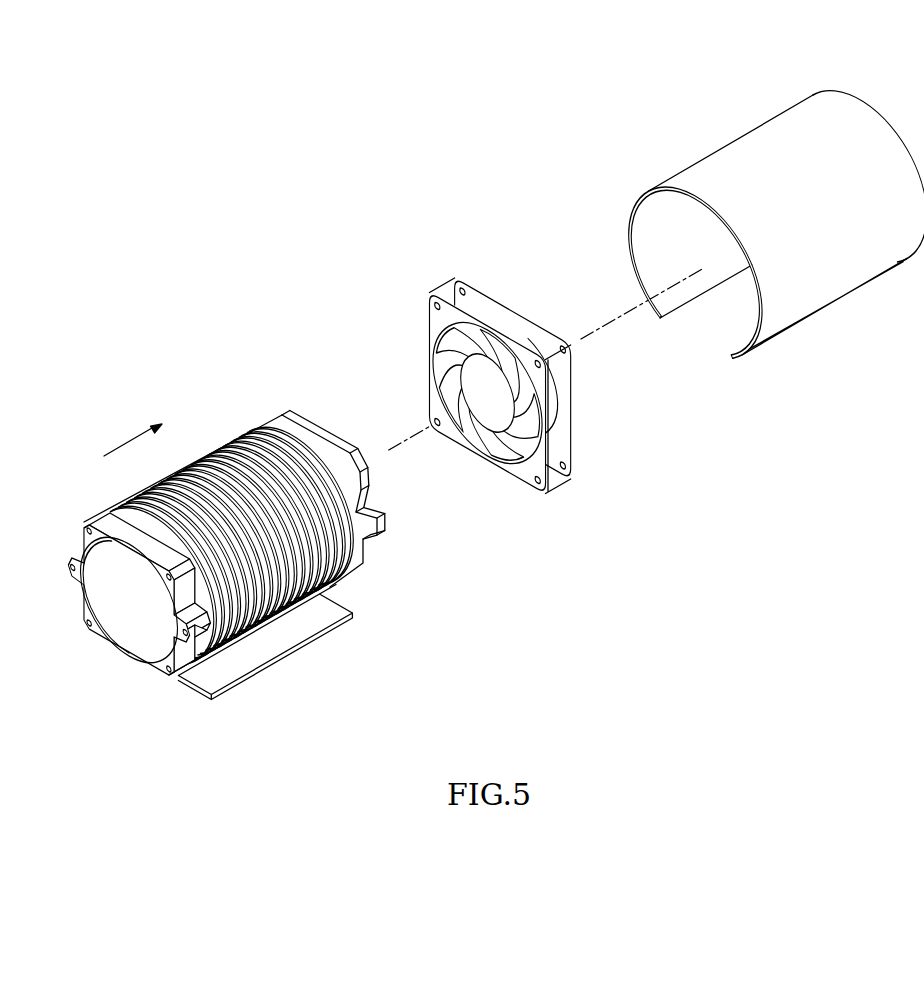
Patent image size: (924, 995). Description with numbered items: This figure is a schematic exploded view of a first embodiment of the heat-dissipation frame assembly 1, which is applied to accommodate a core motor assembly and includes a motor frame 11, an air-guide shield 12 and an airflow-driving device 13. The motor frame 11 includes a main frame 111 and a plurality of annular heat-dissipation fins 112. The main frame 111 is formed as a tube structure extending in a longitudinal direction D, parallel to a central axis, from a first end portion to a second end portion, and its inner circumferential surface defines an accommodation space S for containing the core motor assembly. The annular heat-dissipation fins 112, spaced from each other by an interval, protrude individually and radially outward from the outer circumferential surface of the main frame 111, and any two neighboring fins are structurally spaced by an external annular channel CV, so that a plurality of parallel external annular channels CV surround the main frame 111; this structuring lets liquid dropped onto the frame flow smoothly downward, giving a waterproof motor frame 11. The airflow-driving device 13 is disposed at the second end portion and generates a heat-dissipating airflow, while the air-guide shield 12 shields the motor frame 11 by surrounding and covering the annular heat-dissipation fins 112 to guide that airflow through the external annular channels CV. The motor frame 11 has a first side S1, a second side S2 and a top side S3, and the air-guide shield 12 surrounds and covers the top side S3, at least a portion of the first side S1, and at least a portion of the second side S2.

The heat-dissipation frame assembly 1 is at (164, 239).
The motor frame 11 is at (368, 733).
The main frame 111 is at (188, 637).
The annular heat-dissipation fins 112 is at (267, 622).
The air-guide shield 12 is at (821, 298).
The airflow-driving device 13 is at (529, 481).
The accommodation space S is at (128, 644).
The first side S1 is at (364, 594).
The second side S2 is at (78, 505).
The top side S3 is at (221, 420).
The external annular channel CV is at (206, 452).
The longitudinal direction D is at (133, 437).